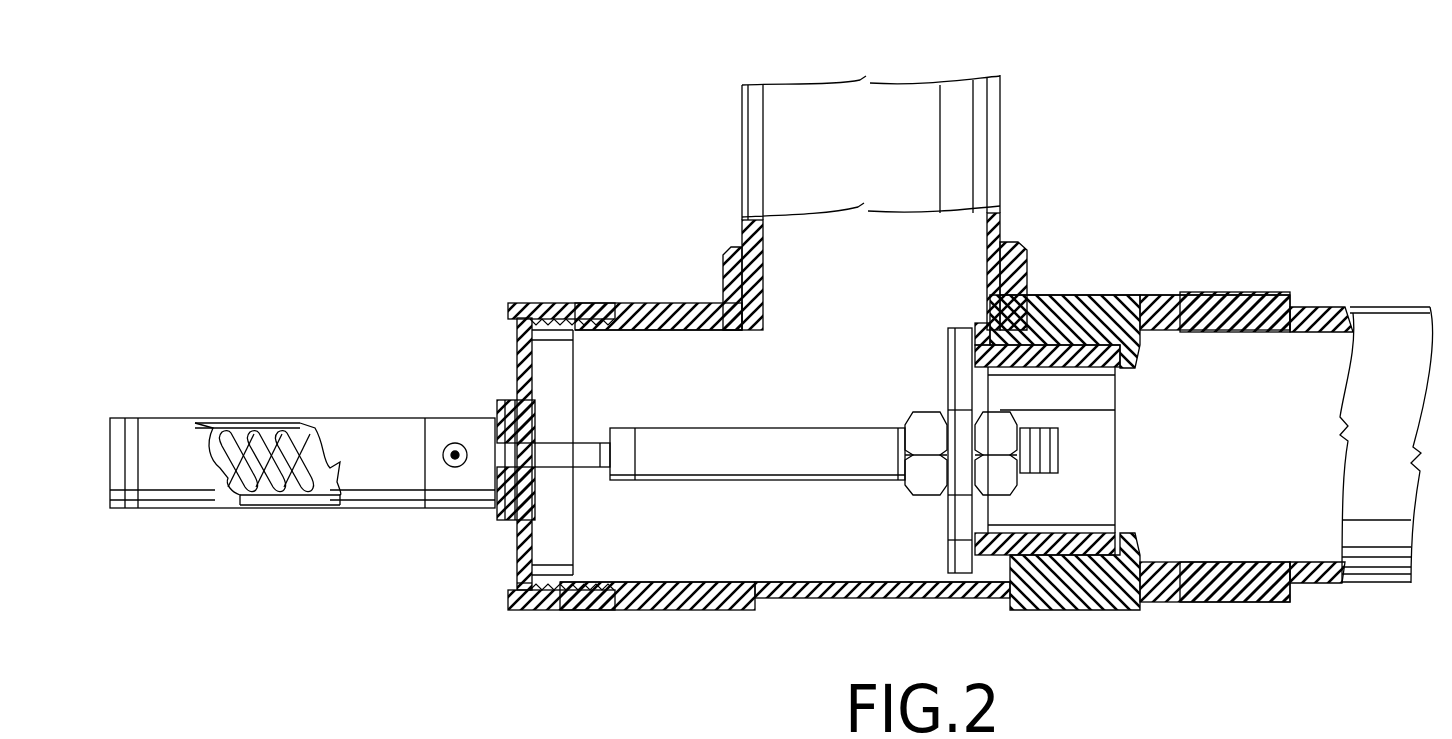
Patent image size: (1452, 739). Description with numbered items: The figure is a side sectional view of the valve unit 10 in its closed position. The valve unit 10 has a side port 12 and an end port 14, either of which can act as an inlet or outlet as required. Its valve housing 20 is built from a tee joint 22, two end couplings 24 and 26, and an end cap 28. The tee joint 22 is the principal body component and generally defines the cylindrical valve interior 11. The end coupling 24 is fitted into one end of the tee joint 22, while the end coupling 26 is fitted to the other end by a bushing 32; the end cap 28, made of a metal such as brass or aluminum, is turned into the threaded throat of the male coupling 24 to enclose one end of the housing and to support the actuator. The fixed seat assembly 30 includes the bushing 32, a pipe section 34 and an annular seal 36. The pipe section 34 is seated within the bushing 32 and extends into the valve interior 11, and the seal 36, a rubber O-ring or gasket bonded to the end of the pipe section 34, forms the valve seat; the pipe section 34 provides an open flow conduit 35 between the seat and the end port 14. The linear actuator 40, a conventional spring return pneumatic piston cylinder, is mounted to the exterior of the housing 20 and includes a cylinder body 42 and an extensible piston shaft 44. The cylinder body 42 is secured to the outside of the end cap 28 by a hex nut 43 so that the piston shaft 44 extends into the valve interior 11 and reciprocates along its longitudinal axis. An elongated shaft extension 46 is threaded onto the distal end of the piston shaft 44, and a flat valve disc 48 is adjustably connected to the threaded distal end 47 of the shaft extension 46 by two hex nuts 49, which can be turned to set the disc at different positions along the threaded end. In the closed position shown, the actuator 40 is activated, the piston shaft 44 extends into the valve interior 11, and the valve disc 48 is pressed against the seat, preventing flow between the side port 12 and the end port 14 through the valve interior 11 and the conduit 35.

The valve unit 10 is at (480, 145).
The valve interior 11 is at (795, 536).
The side port 12 is at (863, 297).
The end port 14 is at (1278, 461).
The valve housing 20 is at (663, 620).
The tee joint 22 is at (693, 300).
The end coupling 24 is at (572, 302).
The end coupling 26 is at (1198, 293).
The end cap 28 is at (523, 545).
The fixed seat assembly 30 is at (1085, 375).
The bushing 32 is at (1100, 325).
The pipe section 34 is at (1065, 540).
The flow conduit 35 is at (1058, 416).
The annular seal 36 is at (980, 325).
The linear actuator 40 is at (175, 405).
The cylinder body 42 is at (362, 417).
The hex nut 43 is at (530, 485).
The piston shaft 44 is at (570, 448).
The shaft extension 46 is at (712, 442).
The threaded distal end 47 is at (1043, 458).
The valve disc 48 is at (958, 380).
The hex nuts 49 is at (932, 478).